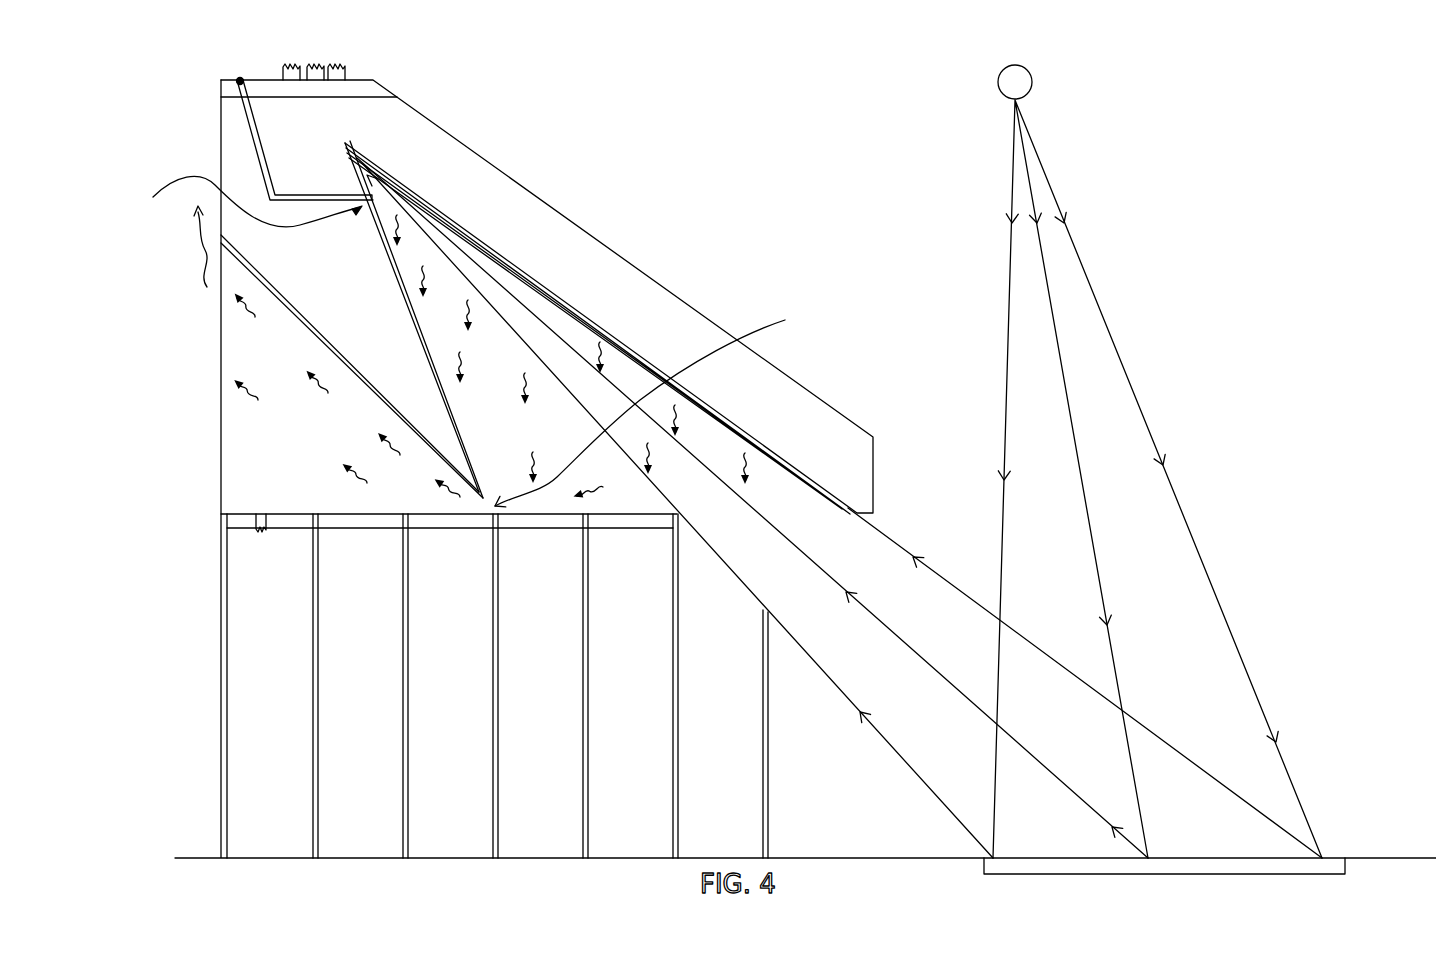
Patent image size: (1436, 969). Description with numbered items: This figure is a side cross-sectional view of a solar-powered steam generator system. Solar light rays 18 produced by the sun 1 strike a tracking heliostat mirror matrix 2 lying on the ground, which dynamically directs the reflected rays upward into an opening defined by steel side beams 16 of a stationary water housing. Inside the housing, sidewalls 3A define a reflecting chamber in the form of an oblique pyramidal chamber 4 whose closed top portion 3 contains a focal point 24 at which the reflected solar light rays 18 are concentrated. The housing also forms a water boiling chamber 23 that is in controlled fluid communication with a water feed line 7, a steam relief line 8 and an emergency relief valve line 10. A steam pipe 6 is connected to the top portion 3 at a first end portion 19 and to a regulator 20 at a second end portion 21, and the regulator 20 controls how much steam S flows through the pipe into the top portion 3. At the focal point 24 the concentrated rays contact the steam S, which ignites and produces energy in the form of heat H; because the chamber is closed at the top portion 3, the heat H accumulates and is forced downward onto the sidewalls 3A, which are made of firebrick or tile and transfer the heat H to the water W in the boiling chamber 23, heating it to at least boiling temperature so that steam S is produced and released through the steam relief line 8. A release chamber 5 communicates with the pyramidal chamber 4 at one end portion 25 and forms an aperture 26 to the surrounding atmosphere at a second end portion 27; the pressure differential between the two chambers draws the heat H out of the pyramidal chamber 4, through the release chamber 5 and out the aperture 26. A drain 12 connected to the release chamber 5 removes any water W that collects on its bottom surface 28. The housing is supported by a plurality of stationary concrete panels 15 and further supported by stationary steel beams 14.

The sun 1 is at (1033, 85).
The tracking heliostat mirror matrix 2 is at (1322, 863).
The top portion 3 is at (357, 150).
The sidewalls 3A is at (312, 338).
The oblique pyramidal chamber 4 is at (728, 460).
The release chamber 5 is at (262, 442).
The steam pipe 6 is at (250, 133).
The water feed line 7 is at (345, 64).
The steam relief line 8 is at (320, 62).
The emergency relief valve line 10 is at (283, 63).
The drain 12 is at (260, 536).
The stationary steel beams 14 is at (680, 745).
The stationary concrete panels 15 is at (250, 665).
The steel side beams 16 is at (367, 528).
The solar light rays 18 is at (1008, 320).
The first end portion 19 is at (222, 77).
The regulator 20 is at (237, 79).
The second end portion 21 is at (244, 201).
The water boiling chamber 23 is at (612, 282).
The focal point 24 is at (370, 162).
The end portion 25 is at (657, 409).
The aperture 26 is at (221, 387).
The second end portion 27 is at (221, 305).
The bottom surface 28 is at (277, 513).
The heat H is at (470, 318).
The steam S is at (228, 89).
The water W is at (228, 115).